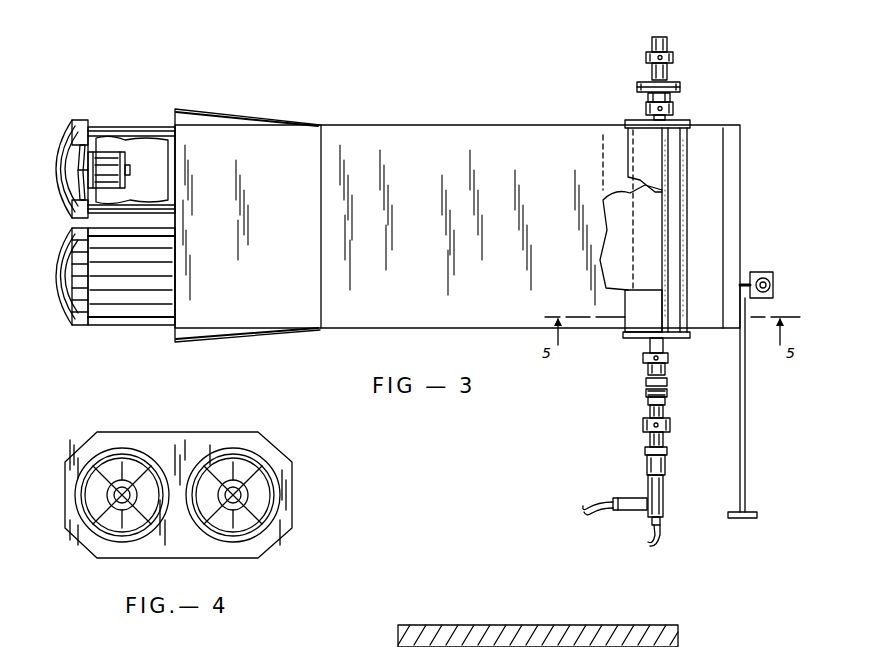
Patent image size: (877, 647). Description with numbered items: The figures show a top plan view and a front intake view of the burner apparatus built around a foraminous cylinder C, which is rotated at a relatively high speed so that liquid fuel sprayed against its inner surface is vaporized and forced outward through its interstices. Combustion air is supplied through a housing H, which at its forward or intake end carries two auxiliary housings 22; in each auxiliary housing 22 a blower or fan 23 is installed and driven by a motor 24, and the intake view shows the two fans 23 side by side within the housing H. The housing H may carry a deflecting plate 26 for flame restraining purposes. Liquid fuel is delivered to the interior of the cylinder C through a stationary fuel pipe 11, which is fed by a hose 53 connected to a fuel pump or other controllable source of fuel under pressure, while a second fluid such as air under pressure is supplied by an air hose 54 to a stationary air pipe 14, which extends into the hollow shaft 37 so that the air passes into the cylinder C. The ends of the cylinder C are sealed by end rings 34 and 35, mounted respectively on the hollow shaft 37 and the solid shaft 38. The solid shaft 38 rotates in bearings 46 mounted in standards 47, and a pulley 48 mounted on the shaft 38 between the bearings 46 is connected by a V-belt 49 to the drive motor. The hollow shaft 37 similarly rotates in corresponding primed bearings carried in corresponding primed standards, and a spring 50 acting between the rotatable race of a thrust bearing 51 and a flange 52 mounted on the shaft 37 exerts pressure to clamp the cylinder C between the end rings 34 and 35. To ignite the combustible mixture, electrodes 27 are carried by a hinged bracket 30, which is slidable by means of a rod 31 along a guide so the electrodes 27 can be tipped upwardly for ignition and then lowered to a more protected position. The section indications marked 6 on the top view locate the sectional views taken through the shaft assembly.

In FIG. 3, the auxiliary housing 22 is at (117, 310).
In FIG. 4, the auxiliary housing 22 is at (77, 486).
In FIG. 3, the blower or fan 23 is at (80, 160).
In FIG. 4, the blower or fan 23 is at (134, 522).
In FIG. 3, the motor 24 is at (125, 170).
In FIG. 3, the deflecting plate 26 is at (638, 155).
In FIG. 3, the electrodes 27 is at (773, 285).
In FIG. 3, the hinged bracket 30 is at (762, 272).
In FIG. 3, the rod 31 is at (745, 392).
In FIG. 3, the end ring 34 is at (625, 334).
In FIG. 3, the end ring 35 is at (690, 126).
In FIG. 3, the hollow shaft 37 is at (665, 465).
In FIG. 3, the solid shaft 38 is at (667, 44).
In FIG. 3, the bearings 46 is at (636, 93).
In FIG. 3, the standards 47 is at (636, 52).
In FIG. 3, the pulley 48 is at (680, 85).
In FIG. 3, the V-belt 49 is at (637, 87).
In FIG. 3, the spring 50 is at (667, 392).
In FIG. 3, the thrust bearing 51 is at (665, 401).
In FIG. 3, the flange 52 is at (646, 382).
In FIG. 3, the hose 53 is at (648, 542).
In FIG. 3, the air hose 54 is at (582, 507).
In FIG. 3, the air pipe 14 is at (625, 510).
In FIG. 3, the fuel pipe 11 is at (660, 520).
In FIG. 3, the section line 6 is at (697, 118).
In FIG. 3, the housing H is at (421, 123).
In FIG. 4, the housing H is at (200, 431).
In FIG. 3, the foraminous cylinder C is at (672, 212).